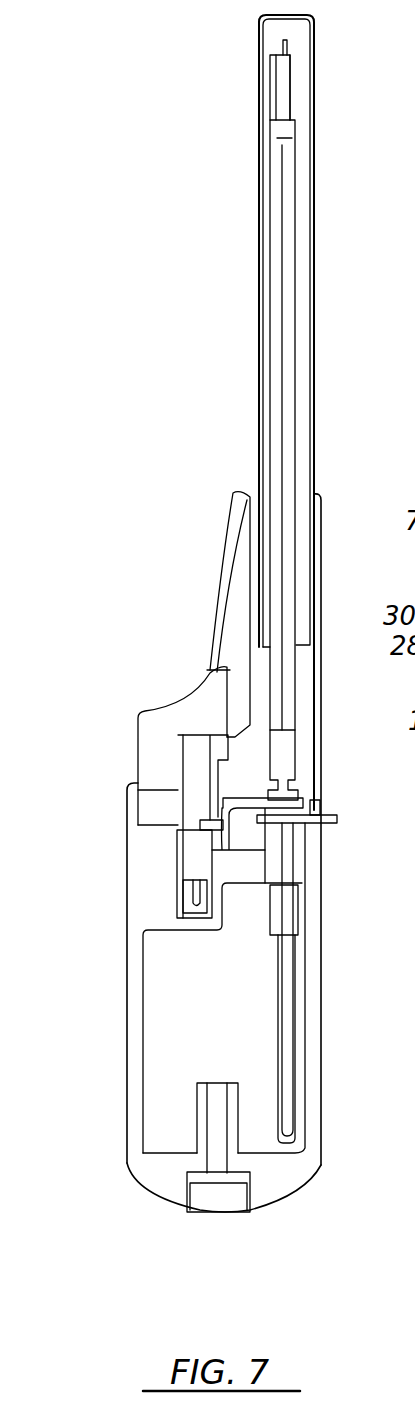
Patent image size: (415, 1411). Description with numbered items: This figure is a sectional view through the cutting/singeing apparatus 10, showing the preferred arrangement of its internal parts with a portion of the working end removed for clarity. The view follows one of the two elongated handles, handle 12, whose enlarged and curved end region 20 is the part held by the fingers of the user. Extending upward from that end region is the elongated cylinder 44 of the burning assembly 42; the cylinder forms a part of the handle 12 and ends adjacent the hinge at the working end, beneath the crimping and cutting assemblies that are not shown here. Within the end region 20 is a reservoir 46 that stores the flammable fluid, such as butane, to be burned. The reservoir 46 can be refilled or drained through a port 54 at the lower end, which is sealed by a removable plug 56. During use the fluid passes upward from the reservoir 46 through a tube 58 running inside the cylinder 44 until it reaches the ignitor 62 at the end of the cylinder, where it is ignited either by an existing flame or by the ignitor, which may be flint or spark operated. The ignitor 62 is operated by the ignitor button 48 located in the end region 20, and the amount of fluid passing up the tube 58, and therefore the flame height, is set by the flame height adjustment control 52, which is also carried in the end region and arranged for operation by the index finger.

The cutting/singeing apparatus 10 is at (165, 441).
The elongated handle 12 is at (127, 1055).
The end region 20 is at (127, 1137).
The burning assembly 42 is at (250, 118).
The elongated cylinder 44 is at (259, 272).
The reservoir 46 is at (237, 995).
The ignitor button 48 is at (167, 703).
The flame height adjustment control 52 is at (337, 815).
The port 54 is at (222, 1085).
The removable plug 56 is at (215, 1215).
The tube 58 is at (270, 370).
The ignitor 62 is at (267, 40).